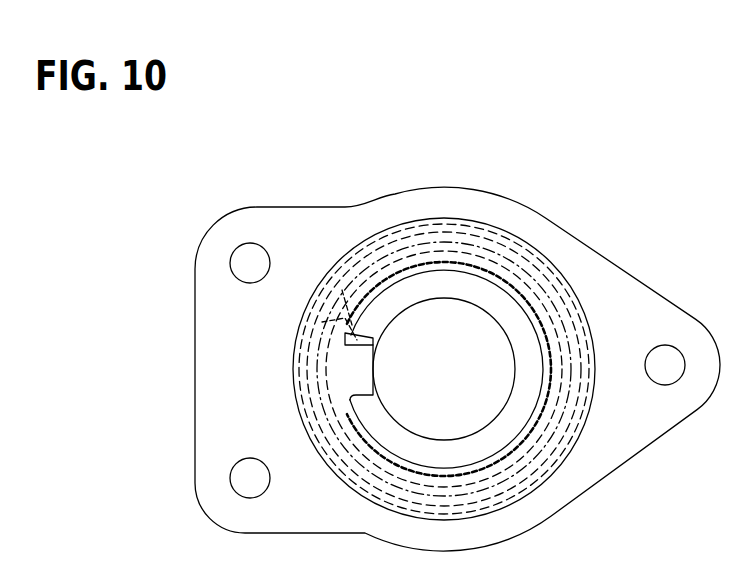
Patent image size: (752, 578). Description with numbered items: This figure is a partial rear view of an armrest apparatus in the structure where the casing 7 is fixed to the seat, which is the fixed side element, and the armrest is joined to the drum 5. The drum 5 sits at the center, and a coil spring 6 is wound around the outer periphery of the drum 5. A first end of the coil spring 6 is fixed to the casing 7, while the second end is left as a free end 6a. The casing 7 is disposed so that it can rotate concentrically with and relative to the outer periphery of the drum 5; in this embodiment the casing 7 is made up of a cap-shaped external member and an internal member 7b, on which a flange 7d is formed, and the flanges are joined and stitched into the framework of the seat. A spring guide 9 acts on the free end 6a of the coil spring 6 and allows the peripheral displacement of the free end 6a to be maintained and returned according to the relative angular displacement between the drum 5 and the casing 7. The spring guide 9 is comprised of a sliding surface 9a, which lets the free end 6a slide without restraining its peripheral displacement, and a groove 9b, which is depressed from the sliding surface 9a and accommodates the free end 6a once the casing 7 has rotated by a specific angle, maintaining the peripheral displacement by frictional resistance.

The drum 5 is at (395, 262).
The coil spring 6 is at (292, 371).
The free end 6a is at (337, 273).
The casing 7 is at (432, 218).
The internal member 7b is at (478, 218).
The flange 7d is at (574, 243).
The spring guide 9 is at (444, 369).
The sliding surface 9a is at (378, 423).
The groove 9b is at (360, 365).